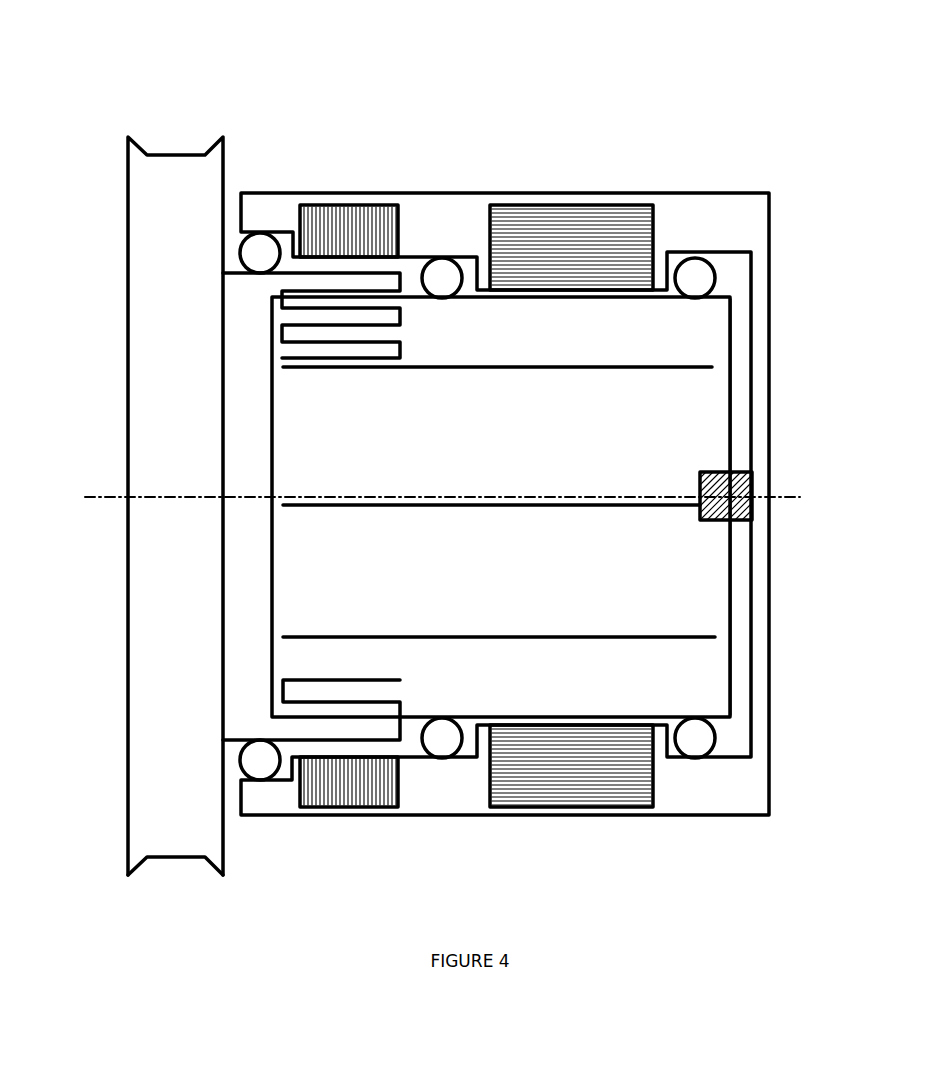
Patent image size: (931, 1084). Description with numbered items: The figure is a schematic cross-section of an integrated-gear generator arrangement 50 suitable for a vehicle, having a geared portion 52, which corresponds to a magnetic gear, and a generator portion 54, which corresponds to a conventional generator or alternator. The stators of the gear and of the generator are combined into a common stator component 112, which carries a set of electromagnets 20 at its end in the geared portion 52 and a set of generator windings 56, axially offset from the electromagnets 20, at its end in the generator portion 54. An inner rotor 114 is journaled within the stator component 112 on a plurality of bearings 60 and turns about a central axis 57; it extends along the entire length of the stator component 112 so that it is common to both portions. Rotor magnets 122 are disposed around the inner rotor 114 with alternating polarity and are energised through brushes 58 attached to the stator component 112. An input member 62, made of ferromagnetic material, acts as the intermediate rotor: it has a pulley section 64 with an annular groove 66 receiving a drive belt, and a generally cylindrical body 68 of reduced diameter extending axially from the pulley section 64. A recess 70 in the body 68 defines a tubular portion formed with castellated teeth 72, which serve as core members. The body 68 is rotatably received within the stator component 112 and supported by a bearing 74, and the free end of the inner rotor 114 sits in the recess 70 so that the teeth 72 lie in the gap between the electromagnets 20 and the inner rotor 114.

The integrated-gear generator arrangement 50 is at (139, 48).
The geared portion 52 is at (293, 161).
The generator portion 54 is at (707, 146).
The electromagnets 20 is at (350, 212).
The stator component 112 is at (463, 213).
The generator windings 56 is at (598, 220).
The bearing 74 is at (255, 250).
The input member 62 is at (143, 302).
The recess 70 is at (257, 325).
The central axis 57 is at (102, 497).
The pulley section 64 is at (116, 650).
The annular groove 66 is at (164, 871).
The inner rotor 114 is at (740, 388).
The brushes 58 is at (752, 486).
The rotor magnets 122 is at (690, 690).
The teeth 72 is at (363, 727).
The body 68 is at (253, 713).
The bearings 60 is at (698, 748).